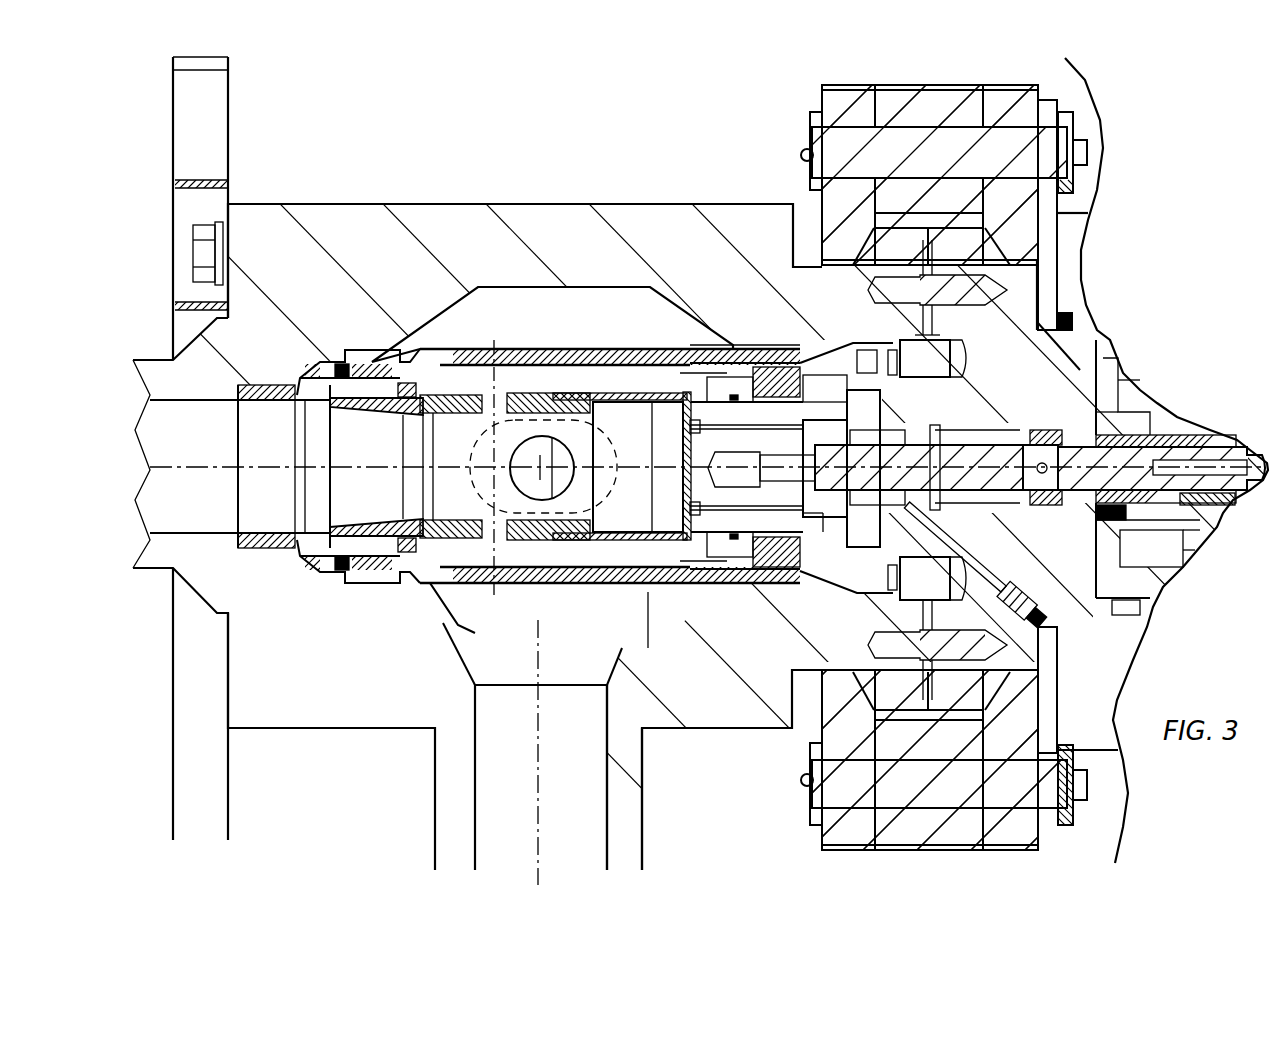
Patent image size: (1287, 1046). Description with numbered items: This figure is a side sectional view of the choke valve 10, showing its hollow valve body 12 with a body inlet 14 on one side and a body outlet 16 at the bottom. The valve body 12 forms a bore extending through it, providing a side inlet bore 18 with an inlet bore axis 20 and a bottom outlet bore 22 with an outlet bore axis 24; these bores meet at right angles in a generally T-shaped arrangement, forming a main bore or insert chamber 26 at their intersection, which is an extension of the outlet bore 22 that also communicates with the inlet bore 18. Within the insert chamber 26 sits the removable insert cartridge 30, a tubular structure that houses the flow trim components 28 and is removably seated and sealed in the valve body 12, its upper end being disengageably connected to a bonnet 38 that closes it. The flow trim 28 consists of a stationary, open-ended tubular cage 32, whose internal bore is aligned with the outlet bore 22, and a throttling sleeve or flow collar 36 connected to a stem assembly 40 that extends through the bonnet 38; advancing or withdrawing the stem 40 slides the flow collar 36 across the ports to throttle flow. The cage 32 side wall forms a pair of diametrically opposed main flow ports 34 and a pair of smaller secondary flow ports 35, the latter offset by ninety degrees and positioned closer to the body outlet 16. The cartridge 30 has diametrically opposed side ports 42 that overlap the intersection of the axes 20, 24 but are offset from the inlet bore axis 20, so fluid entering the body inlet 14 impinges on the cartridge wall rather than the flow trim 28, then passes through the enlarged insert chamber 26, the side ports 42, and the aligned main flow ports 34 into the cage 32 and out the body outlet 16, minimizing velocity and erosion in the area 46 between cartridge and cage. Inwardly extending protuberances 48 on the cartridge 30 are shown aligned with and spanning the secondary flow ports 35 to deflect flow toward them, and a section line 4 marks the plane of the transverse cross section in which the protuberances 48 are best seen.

The choke valve 10 is at (357, 190).
The hollow valve body 12 is at (536, 215).
The body inlet 14 is at (588, 842).
The body outlet 16 is at (180, 458).
The side inlet bore 18 is at (600, 786).
The inlet bore axis 20 is at (535, 782).
The bottom outlet bore 22 is at (222, 402).
The outlet bore axis 24 is at (222, 520).
The main bore (insert chamber) 26 is at (442, 318).
The flow trim components 28 is at (575, 392).
The removable insert cartridge 30 is at (612, 360).
The stationary cage 32 is at (460, 520).
The main flow ports 34 is at (570, 483).
The secondary flow ports 35 is at (490, 413).
The throttling sleeve or flow collar 36 is at (648, 393).
The bonnet 38 is at (808, 348).
The stem assembly 40 is at (955, 450).
The side ports 42 is at (612, 462).
The area between inner cartridge and outer cage 46 is at (478, 588).
The protuberances 48 is at (552, 372).
The section line FIG. 4 is at (515, 466).